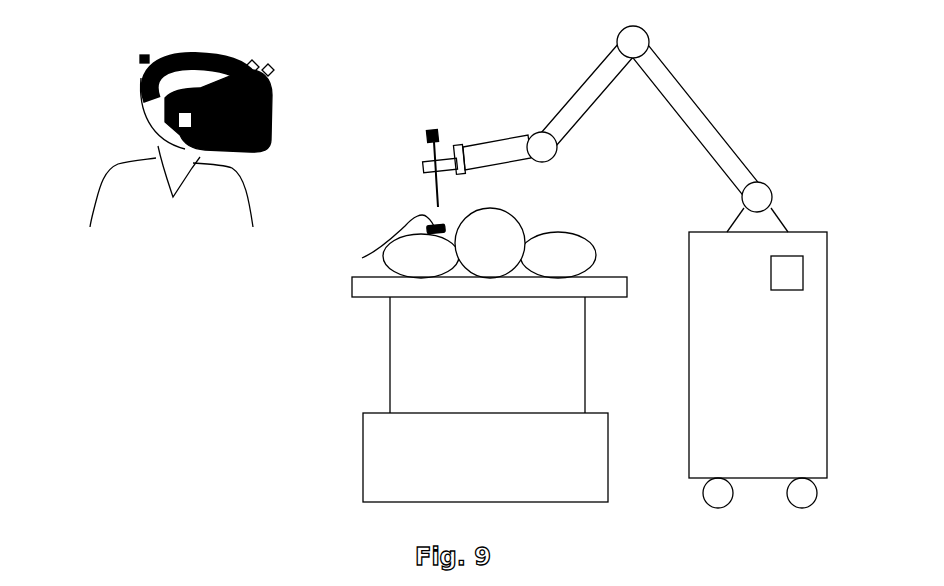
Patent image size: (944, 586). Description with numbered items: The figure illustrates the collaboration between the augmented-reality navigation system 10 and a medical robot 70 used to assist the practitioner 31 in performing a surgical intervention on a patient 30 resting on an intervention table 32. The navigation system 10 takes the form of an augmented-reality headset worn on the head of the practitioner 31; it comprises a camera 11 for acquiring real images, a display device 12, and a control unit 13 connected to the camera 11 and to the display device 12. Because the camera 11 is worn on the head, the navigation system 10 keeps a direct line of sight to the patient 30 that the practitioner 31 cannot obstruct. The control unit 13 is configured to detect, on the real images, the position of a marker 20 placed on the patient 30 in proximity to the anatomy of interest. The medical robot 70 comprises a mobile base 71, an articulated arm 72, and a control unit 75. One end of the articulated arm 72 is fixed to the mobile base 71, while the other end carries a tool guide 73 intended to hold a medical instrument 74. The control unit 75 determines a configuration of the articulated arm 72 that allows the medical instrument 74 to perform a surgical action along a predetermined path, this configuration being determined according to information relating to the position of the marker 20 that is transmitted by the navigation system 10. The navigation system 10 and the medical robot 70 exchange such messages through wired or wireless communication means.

The augmented-reality navigation system 10 is at (229, 101).
The camera 11 is at (263, 58).
The display device 12 is at (259, 131).
The control unit 13 is at (178, 122).
The marker 20 is at (362, 258).
The patient 30 is at (553, 233).
The practitioner 31 is at (90, 225).
The intervention table 32 is at (358, 298).
The medical robot 70 is at (607, 267).
The mobile base 71 is at (689, 367).
The articulated arm 72 is at (700, 105).
The tool guide 73 is at (448, 143).
The medical instrument 74 is at (426, 136).
The control unit 75 is at (771, 278).